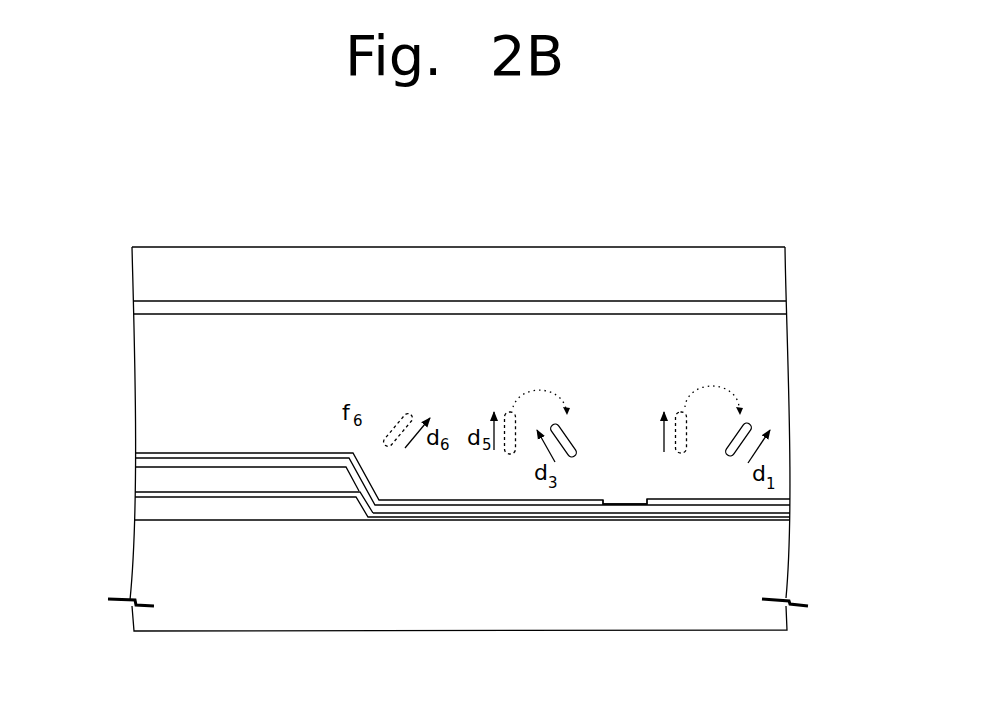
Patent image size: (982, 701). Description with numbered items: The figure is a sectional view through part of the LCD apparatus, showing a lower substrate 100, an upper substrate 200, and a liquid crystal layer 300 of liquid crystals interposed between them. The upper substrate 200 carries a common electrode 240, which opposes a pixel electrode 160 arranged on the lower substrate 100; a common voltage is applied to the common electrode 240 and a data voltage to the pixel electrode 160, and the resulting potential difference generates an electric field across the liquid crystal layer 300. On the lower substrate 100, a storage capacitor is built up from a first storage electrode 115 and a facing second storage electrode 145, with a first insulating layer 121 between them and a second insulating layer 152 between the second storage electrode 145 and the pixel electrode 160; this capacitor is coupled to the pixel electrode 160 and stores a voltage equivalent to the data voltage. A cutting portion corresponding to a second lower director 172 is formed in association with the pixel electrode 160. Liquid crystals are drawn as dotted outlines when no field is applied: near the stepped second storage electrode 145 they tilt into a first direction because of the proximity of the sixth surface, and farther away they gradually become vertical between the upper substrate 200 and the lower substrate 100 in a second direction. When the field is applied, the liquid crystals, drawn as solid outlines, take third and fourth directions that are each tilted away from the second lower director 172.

The lower substrate 100 is at (778, 574).
The first storage electrode 115 is at (137, 510).
The first insulating layer 121 is at (792, 517).
The second storage electrode 145 is at (137, 481).
The second insulating layer 152 is at (792, 506).
The pixel electrode 160 is at (137, 455).
The second lower director 172 is at (621, 490).
The upper substrate 200 is at (777, 270).
The common electrode 240 is at (783, 303).
The liquid crystal layer 300 is at (777, 403).